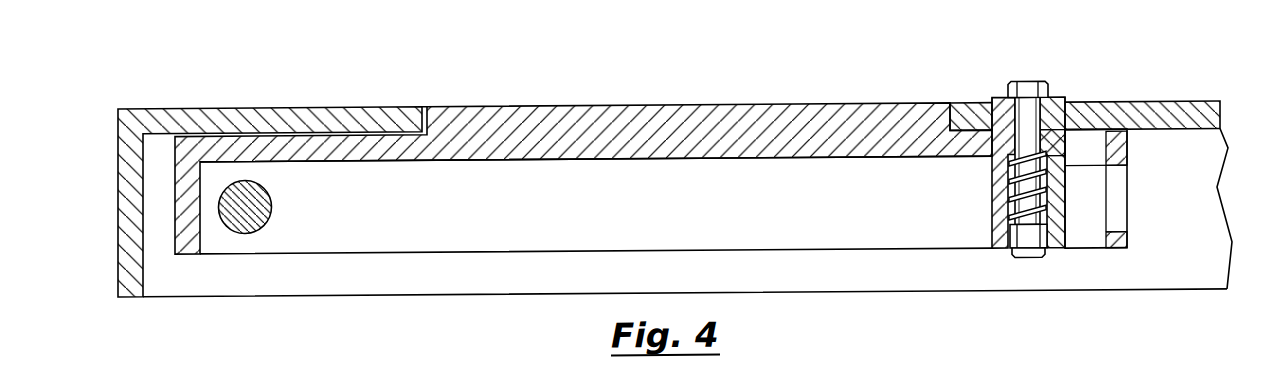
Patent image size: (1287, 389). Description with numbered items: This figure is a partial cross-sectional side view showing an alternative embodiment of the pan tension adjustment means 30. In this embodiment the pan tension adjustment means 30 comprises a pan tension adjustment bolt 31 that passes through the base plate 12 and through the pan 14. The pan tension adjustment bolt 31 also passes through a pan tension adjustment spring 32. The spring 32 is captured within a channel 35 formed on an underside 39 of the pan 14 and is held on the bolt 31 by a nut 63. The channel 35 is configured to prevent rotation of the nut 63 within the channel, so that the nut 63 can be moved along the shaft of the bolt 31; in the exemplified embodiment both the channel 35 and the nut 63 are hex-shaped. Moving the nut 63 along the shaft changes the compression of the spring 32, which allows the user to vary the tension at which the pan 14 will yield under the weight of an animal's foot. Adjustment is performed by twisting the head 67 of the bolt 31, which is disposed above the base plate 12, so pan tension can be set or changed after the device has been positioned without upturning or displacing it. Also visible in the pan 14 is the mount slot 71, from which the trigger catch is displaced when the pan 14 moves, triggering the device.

The base plate 12 is at (1172, 112).
The pan 14 is at (865, 124).
The pan tension adjustment means 30 is at (1041, 42).
The pan tension adjustment bolt 31 is at (1040, 122).
The pan tension adjustment spring 32 is at (1017, 204).
The channel 35 is at (1045, 220).
The underside 39 is at (800, 165).
The nut 63 is at (1028, 248).
The head 67 is at (1027, 96).
The mount slot 71 is at (1117, 194).